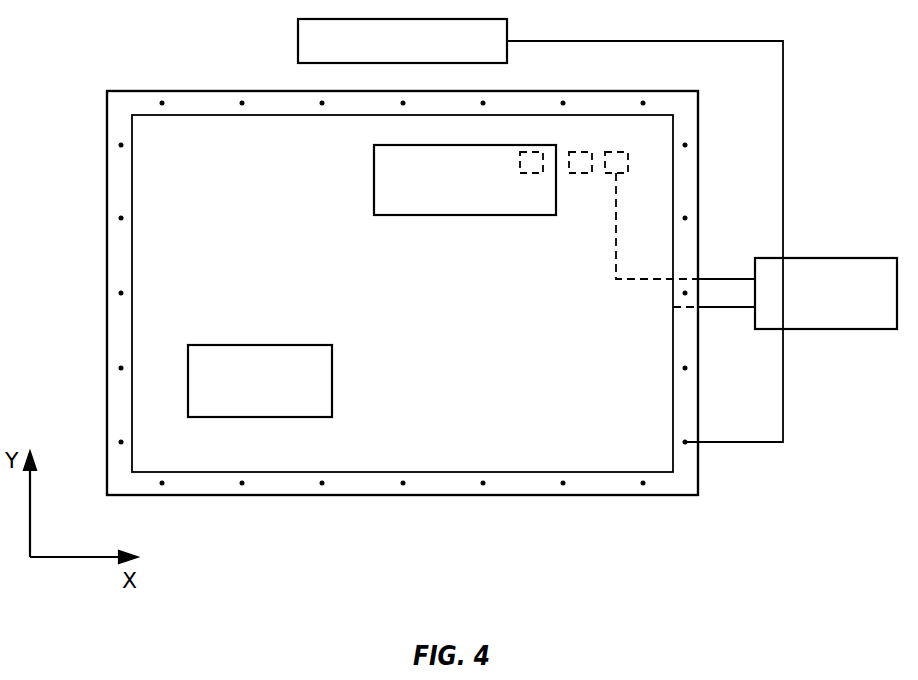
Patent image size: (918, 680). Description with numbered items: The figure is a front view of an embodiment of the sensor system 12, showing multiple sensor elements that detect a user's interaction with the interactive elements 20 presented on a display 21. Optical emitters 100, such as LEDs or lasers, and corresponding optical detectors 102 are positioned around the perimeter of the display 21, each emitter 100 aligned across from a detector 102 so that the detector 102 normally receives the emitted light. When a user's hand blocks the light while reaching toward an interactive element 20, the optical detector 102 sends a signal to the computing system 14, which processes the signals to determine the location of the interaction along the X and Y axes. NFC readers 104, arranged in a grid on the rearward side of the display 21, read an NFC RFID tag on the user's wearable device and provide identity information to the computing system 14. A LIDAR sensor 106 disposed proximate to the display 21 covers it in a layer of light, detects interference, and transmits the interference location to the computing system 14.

The sensor system 12 is at (711, 103).
The computing system 14 is at (826, 258).
The interactive element 20 is at (448, 216).
The display 21 is at (445, 473).
The optical emitter 100 is at (162, 102).
The optical detector 102 is at (686, 143).
The NFC reader 104 is at (617, 152).
The LIDAR sensor 106 is at (404, 19).